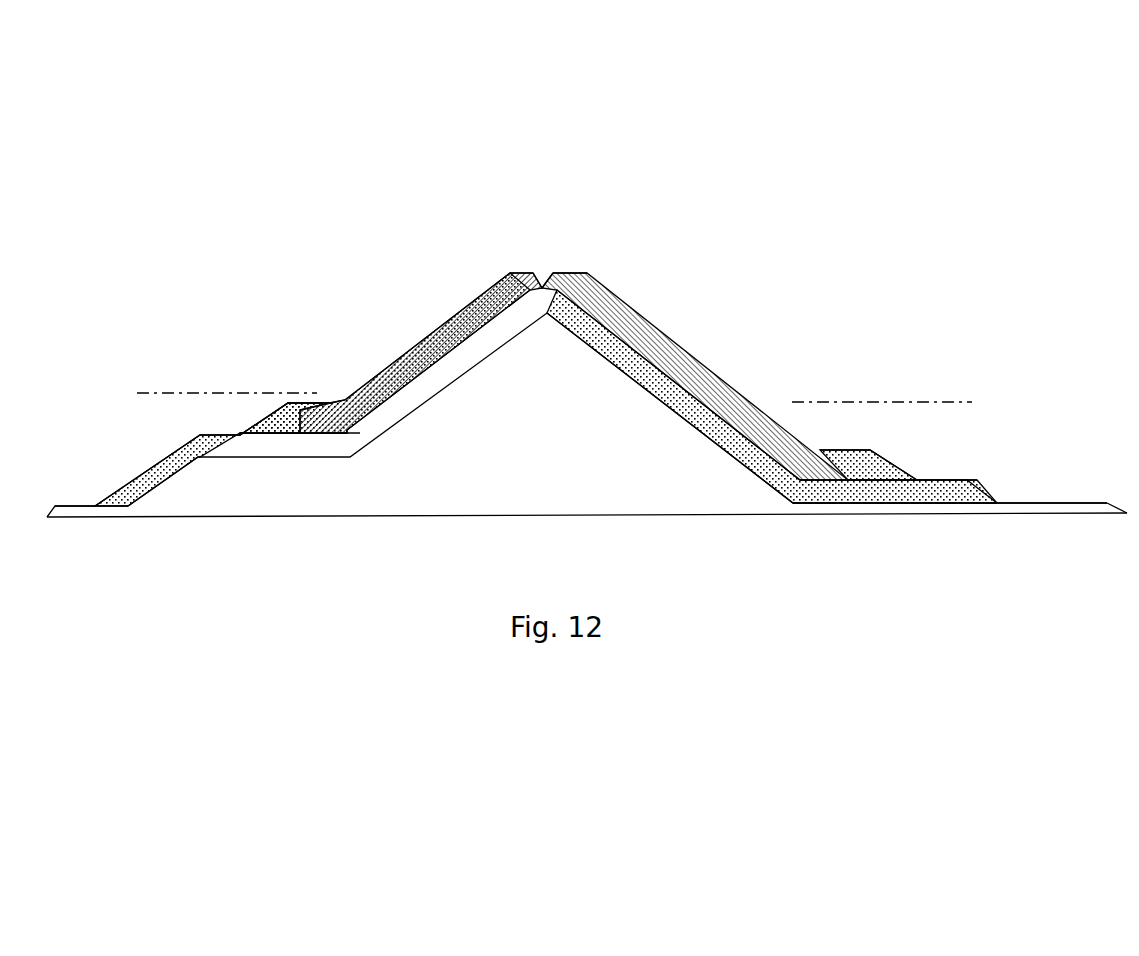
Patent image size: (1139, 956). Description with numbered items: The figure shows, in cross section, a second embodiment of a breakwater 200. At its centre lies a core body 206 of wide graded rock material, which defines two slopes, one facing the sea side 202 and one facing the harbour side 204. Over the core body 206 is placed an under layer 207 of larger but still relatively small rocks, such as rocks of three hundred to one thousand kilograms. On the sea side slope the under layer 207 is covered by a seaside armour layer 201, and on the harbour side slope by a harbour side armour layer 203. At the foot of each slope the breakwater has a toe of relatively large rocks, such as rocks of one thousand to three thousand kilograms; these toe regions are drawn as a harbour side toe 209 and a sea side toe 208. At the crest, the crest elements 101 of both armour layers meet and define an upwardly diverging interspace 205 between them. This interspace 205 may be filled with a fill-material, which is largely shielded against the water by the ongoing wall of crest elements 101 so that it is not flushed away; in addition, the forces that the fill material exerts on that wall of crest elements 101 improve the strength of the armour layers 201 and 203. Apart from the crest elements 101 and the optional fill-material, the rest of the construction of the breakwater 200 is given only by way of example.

The breakwater 200 is at (587, 280).
The seaside armour layer 201 is at (695, 376).
The sea side 202 is at (1015, 308).
The harbour side armour layer 203 is at (421, 346).
The harbour side 204 is at (115, 264).
The interspace 205 is at (542, 273).
The core body 206 is at (569, 461).
The under layer 207 is at (382, 417).
The rear toe berm 208 is at (950, 460).
The front toe berm 209 is at (230, 386).
The crest elements 101 is at (525, 273).